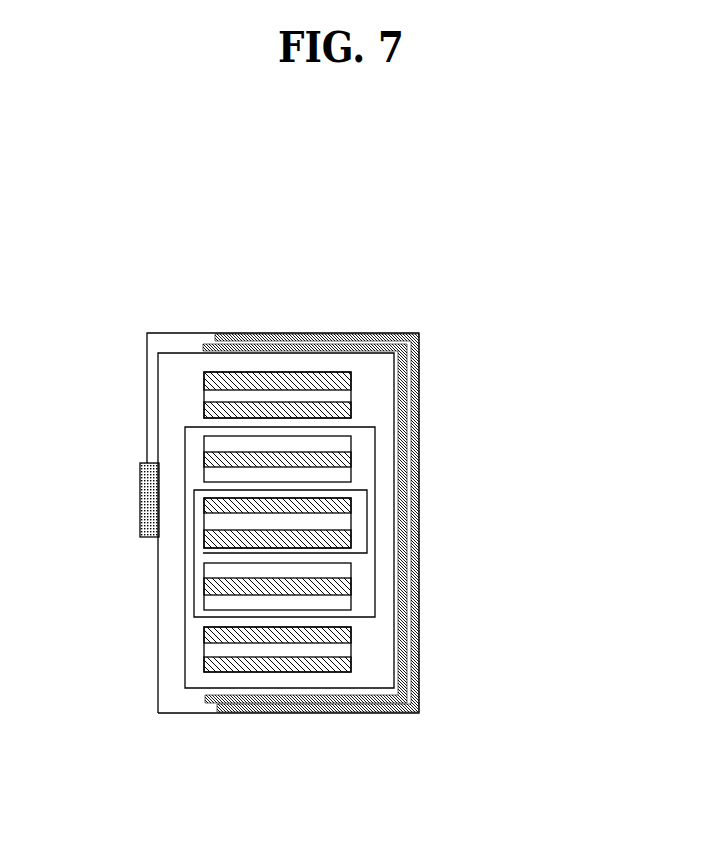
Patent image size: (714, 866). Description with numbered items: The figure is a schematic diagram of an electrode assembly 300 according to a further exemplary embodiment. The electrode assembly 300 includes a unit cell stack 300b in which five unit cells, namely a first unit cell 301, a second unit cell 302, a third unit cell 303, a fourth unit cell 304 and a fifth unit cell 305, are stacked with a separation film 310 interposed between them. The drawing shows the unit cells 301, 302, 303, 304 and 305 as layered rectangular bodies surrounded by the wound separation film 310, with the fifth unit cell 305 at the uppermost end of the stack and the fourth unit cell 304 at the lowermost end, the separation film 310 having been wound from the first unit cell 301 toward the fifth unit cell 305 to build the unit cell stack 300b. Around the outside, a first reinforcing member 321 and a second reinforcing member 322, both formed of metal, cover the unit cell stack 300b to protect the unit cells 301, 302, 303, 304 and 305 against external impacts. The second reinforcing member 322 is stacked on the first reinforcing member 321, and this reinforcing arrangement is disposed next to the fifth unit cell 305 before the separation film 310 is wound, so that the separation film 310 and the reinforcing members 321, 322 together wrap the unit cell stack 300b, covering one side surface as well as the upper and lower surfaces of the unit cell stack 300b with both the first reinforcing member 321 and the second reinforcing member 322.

The electrode assembly 300 is at (67, 305).
The unit cell stack 300b is at (570, 412).
The first unit cell 301 is at (348, 522).
The second unit cell 302 is at (348, 586).
The third unit cell 303 is at (350, 460).
The fourth unit cell 304 is at (348, 650).
The fifth unit cell 305 is at (345, 396).
The separation film 310 is at (158, 637).
The first reinforcing member 321 is at (204, 695).
The second reinforcing member 322 is at (209, 338).